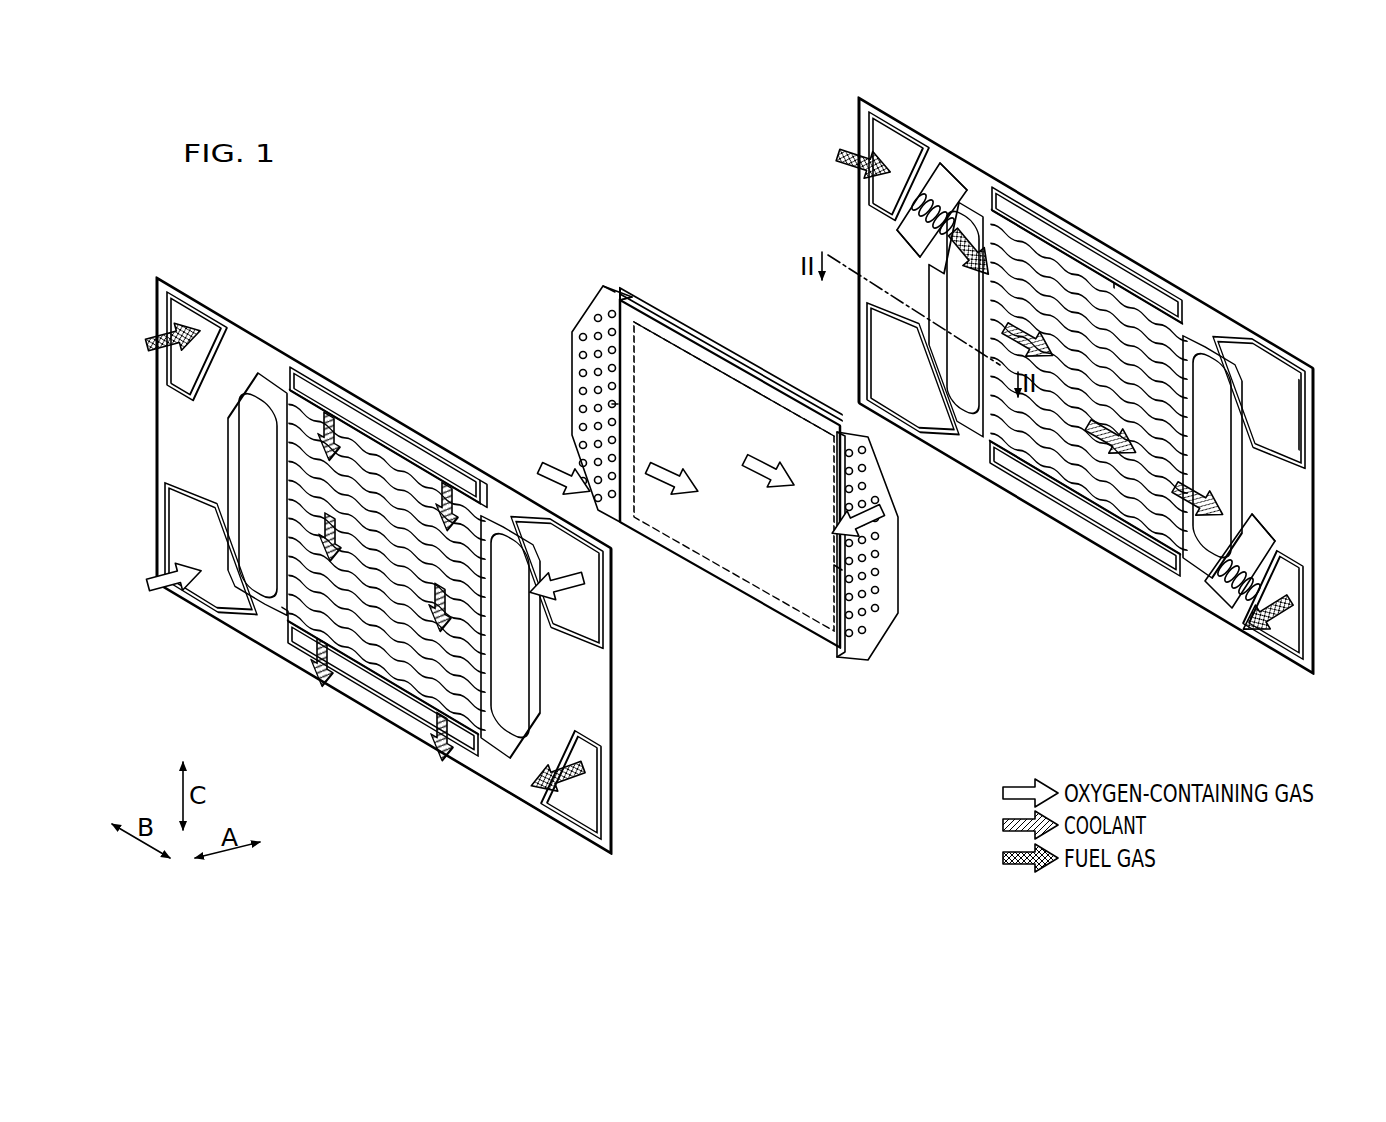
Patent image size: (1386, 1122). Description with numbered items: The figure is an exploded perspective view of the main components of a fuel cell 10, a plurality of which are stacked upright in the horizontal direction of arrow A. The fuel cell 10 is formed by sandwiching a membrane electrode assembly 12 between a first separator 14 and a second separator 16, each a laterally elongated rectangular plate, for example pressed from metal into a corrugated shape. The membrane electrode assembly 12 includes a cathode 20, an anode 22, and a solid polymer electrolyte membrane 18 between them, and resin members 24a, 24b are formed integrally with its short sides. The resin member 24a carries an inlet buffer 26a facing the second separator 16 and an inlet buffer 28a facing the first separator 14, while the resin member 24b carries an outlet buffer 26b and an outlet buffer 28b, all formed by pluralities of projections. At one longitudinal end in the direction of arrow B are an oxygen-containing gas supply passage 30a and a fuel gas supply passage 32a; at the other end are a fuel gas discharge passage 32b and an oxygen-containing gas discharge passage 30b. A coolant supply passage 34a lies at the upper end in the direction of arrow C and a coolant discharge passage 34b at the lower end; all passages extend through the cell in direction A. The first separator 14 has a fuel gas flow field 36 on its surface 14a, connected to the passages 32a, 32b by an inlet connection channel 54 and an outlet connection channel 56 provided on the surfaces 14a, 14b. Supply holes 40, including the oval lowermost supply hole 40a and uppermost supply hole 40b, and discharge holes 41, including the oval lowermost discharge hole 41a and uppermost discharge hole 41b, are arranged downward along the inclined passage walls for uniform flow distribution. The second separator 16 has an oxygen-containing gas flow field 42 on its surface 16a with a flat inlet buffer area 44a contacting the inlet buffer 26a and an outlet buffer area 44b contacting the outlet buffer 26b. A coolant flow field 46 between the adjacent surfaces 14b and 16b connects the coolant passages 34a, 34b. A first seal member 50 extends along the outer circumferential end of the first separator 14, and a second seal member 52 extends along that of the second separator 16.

The fuel cell 10 is at (300, 207).
The membrane electrode assembly 12 is at (615, 292).
The first separator 14 is at (856, 117).
The surface of the first separator 14a is at (1300, 498).
The surface of the first separator 14b is at (1303, 513).
The second separator 16 is at (192, 290).
The surface of the second separator 16a is at (590, 716).
The surface of the second separator 16b is at (502, 772).
The solid polymer electrolyte membrane 18 is at (675, 318).
The cathode 20 is at (755, 415).
The anode 22 is at (700, 372).
The resin member 24a is at (583, 313).
The resin member 24b is at (886, 656).
The inlet buffer 26a is at (590, 386).
The outlet buffer 26b is at (870, 606).
The inlet buffer 28a is at (618, 406).
The outlet buffer 28b is at (834, 572).
The oxygen-containing gas supply passage 30a is at (190, 522).
The oxygen-containing gas discharge passage 30b is at (588, 602).
The fuel gas supply passage 32a is at (183, 365).
The fuel gas discharge passage 32b is at (585, 804).
The coolant supply passage 34a is at (1087, 200).
The coolant discharge passage 34b is at (386, 690).
The fuel gas flow field 36 is at (990, 430).
The supply holes 40 is at (910, 228).
The lowermost supply hole 40a is at (900, 233).
The uppermost supply hole 40b is at (948, 205).
The discharge holes 41 is at (1266, 640).
The lowermost discharge hole 41a is at (1213, 592).
The uppermost discharge hole 41b is at (1246, 540).
The oxygen-containing gas flow field 42 is at (398, 505).
The inlet buffer area 44a is at (255, 470).
The outlet buffer area 44b is at (515, 673).
The coolant flow field 46 is at (330, 600).
The first seal member 50 is at (1313, 410).
The second seal member 52 is at (487, 470).
The inlet connection channel 54 is at (967, 182).
The outlet connection channel 56 is at (1198, 586).